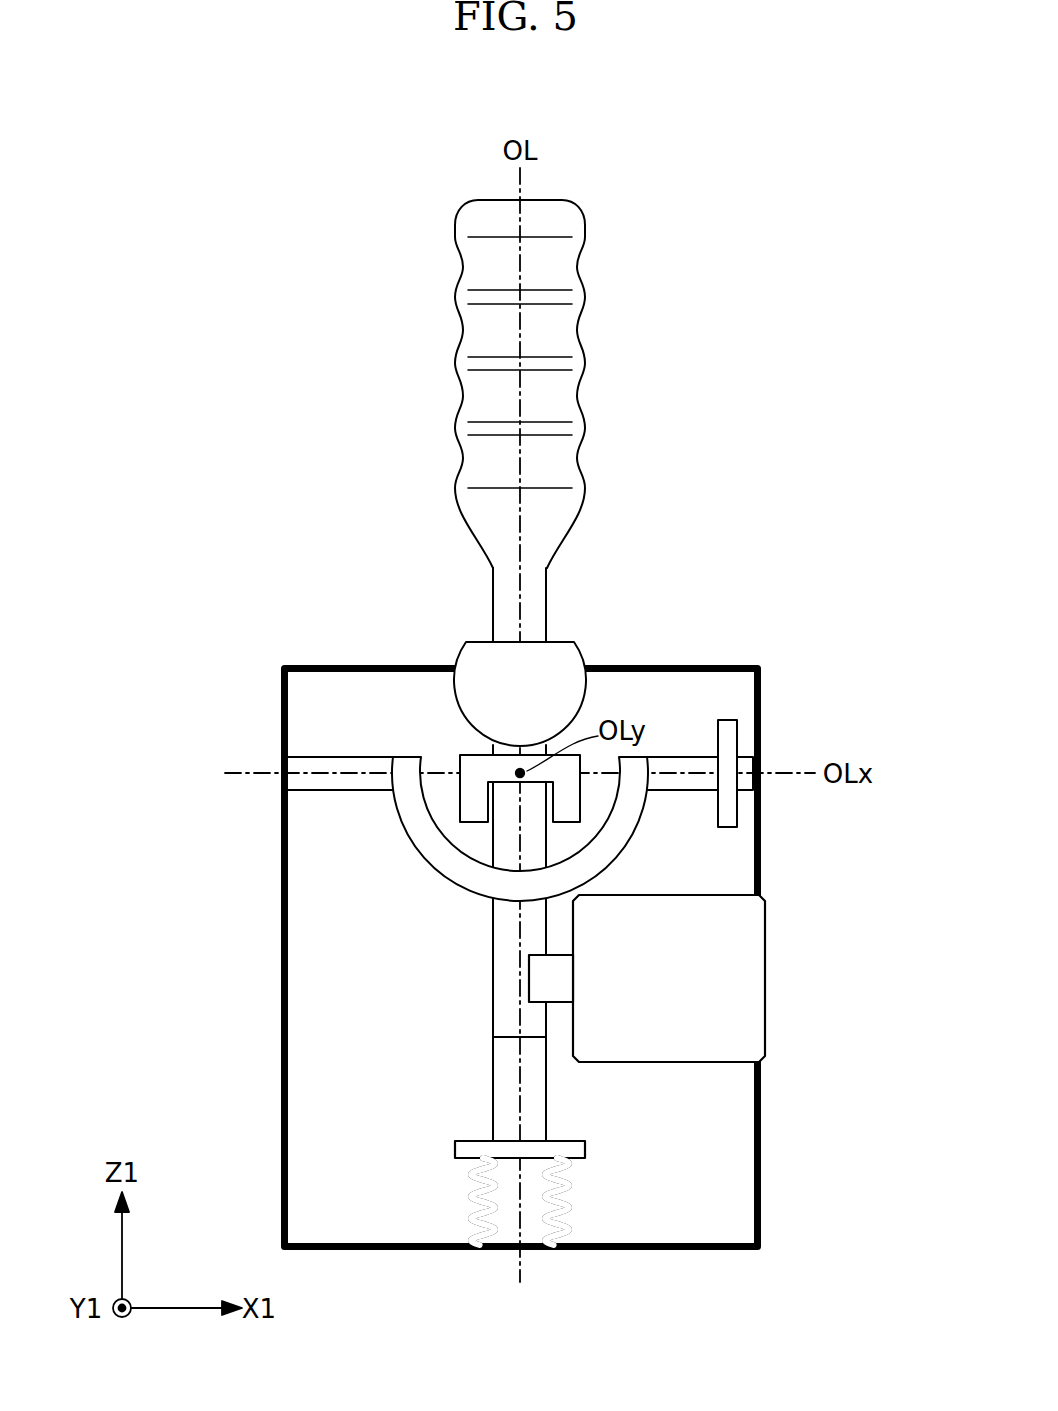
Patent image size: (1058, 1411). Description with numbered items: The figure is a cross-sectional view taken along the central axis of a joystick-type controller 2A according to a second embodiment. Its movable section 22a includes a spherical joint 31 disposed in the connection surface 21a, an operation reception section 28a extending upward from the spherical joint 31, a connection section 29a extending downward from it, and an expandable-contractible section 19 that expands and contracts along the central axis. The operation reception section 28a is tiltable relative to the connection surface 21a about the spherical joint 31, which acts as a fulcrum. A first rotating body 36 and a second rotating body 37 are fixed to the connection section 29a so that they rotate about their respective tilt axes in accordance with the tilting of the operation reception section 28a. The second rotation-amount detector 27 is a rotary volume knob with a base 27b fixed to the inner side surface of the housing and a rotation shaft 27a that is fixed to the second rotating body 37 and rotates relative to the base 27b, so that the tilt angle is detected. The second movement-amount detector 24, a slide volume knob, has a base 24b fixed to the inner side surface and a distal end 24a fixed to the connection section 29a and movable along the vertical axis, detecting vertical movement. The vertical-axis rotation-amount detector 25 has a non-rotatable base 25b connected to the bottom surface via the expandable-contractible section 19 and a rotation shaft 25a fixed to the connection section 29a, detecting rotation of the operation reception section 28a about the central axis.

The controller 2A is at (732, 148).
The movable section 22a is at (575, 376).
The operation reception section 28a is at (584, 262).
The connection surface 21a is at (326, 665).
The spherical joint 31 is at (458, 652).
The second rotation-amount detector 27 is at (523, 700).
The rotation shaft 27a is at (653, 757).
The base 27b is at (723, 724).
The first rotating body 36 is at (460, 770).
The second rotating body 37 is at (448, 880).
The connection section 29a is at (493, 988).
The second movement-amount detector 24 is at (647, 1061).
The distal end 24a is at (558, 1002).
The base 24b is at (695, 1062).
The Z1-axis rotation-amount detector 25 is at (451, 1109).
The rotation shaft 25a is at (493, 1127).
The base 25b is at (476, 1161).
The expandable-contractible section 19 is at (470, 1198).